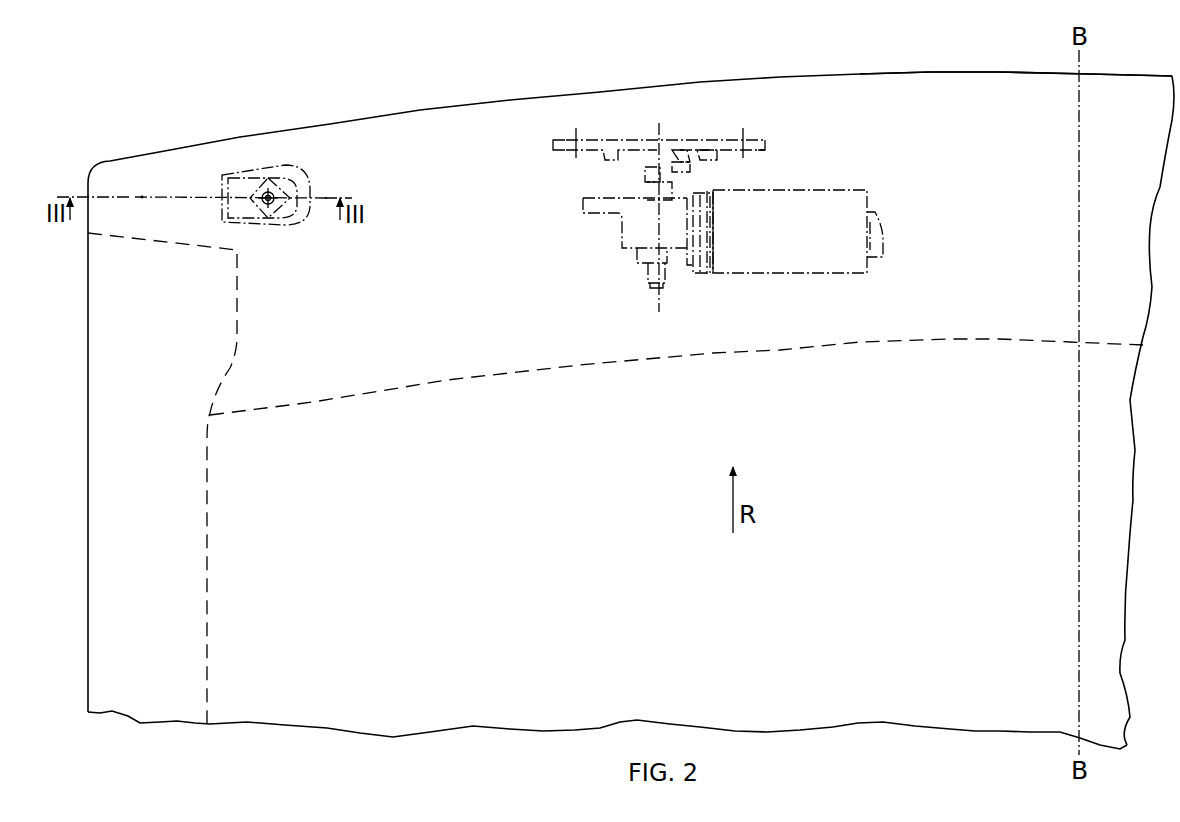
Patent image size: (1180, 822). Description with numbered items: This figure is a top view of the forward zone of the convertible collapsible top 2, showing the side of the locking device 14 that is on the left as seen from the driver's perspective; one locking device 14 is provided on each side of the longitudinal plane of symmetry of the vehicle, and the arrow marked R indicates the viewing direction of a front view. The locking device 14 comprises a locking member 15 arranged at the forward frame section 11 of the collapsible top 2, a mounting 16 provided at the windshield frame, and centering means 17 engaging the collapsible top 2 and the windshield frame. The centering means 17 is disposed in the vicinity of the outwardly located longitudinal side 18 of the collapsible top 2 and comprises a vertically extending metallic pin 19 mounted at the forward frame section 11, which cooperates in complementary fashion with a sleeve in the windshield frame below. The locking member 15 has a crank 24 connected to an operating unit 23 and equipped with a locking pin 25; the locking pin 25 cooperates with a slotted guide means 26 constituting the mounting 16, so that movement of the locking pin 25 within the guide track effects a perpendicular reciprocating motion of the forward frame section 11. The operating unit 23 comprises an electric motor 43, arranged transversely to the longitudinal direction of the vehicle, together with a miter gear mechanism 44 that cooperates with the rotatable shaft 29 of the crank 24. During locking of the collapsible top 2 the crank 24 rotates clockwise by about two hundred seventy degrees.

The collapsible top 2 is at (465, 736).
The forward frame section 11 is at (884, 92).
The locking device 14 is at (595, 118).
The locking member 15 is at (572, 207).
The mounting 16 is at (597, 140).
The centering means 17 is at (272, 160).
The longitudinal sides 18 is at (86, 255).
The pin 19 is at (268, 208).
The operating unit 23 is at (762, 280).
The crank 24 is at (690, 166).
The locking pin 25 is at (702, 150).
The slotted guide means 26 is at (765, 148).
The rotatable shaft 29 is at (647, 176).
The electric motor 43 is at (826, 260).
The gear mechanism 44 is at (660, 215).